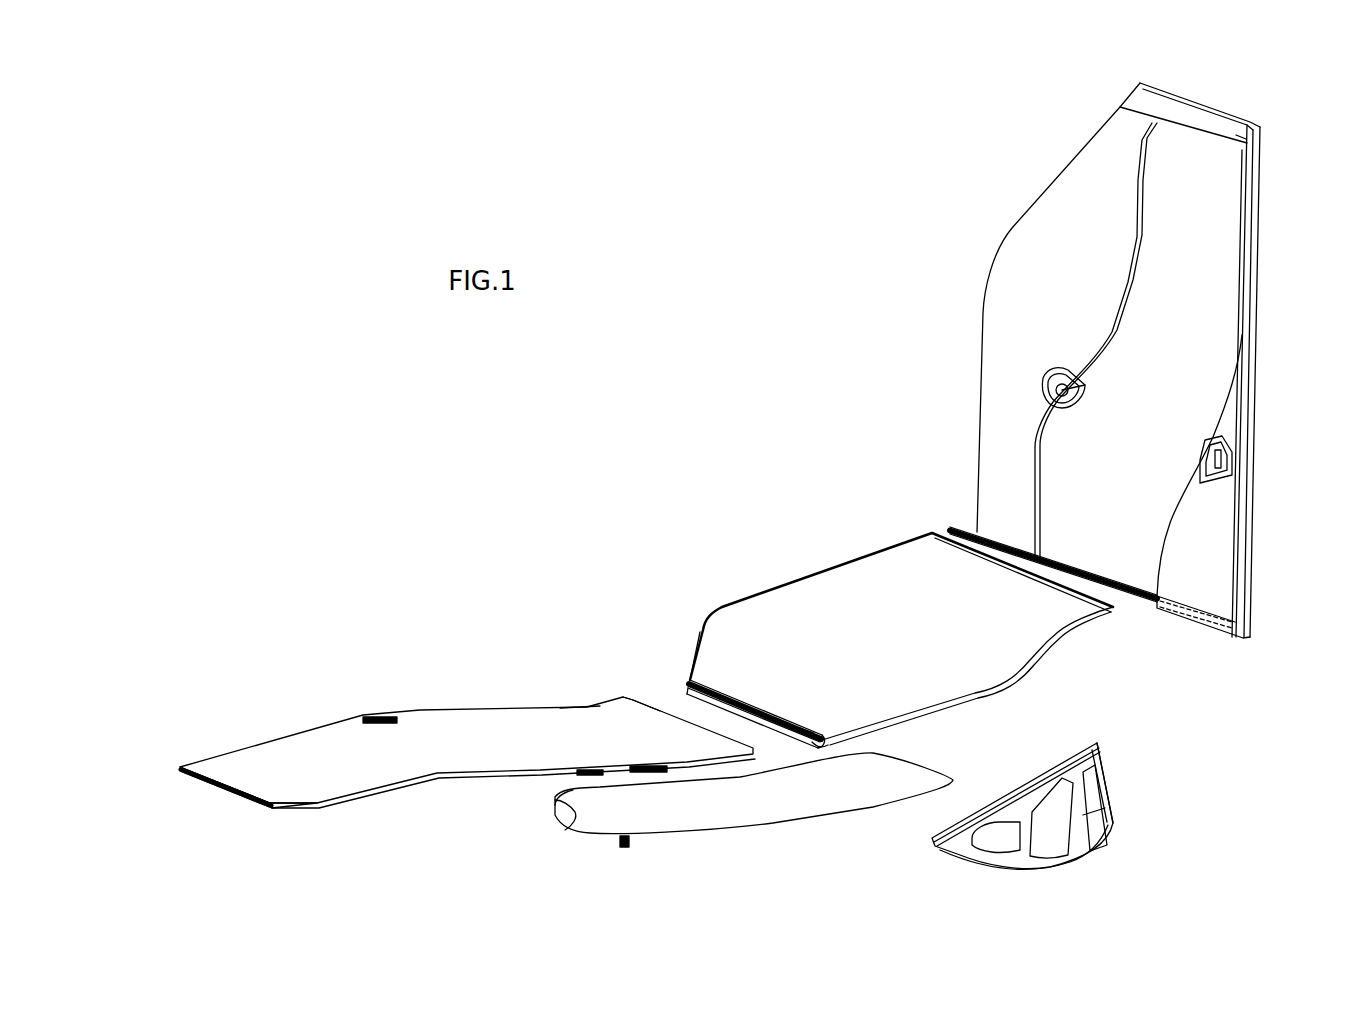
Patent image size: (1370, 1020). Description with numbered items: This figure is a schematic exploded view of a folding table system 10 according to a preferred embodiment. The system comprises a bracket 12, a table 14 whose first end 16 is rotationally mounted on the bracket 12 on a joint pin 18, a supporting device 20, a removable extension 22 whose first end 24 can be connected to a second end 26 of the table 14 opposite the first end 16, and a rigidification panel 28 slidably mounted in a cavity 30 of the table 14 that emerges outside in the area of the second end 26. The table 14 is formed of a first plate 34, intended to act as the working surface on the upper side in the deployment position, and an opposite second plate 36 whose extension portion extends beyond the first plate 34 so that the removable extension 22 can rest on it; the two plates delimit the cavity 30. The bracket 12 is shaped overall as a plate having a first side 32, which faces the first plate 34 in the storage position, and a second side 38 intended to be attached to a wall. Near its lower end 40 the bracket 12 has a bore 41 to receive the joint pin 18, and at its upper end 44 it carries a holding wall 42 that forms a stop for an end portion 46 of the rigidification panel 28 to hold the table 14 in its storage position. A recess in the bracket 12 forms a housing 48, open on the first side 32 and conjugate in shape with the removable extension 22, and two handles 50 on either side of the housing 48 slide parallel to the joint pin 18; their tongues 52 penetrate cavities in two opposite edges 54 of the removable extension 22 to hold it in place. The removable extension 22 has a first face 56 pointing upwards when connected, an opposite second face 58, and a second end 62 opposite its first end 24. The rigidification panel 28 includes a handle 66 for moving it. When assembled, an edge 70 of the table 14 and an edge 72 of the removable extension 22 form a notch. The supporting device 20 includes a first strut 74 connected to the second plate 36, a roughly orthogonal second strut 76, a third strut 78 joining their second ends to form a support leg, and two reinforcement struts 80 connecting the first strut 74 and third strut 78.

The folding table system 10 is at (705, 391).
The bracket 12 is at (1256, 316).
The table 14 is at (808, 563).
The first end 16 is at (1113, 622).
The joint pin 18 is at (1140, 612).
The supporting device 20 is at (1120, 800).
The removable extension 22 is at (500, 708).
The first end 24 is at (647, 700).
The second end 26 is at (690, 697).
The rigidification panel 28 is at (775, 822).
The cavity 30 is at (780, 737).
The first side 32 is at (1010, 244).
The first plate 34 is at (723, 690).
The second plate 36 is at (780, 727).
The second side 38 is at (1256, 528).
The lower end 40 is at (1222, 640).
The bore 41 is at (1220, 614).
The holding wall 42 is at (1262, 144).
The upper end 44 is at (1195, 98).
The end portion 46 is at (572, 815).
The housing 48 is at (1132, 422).
The handles 50 is at (1048, 374).
The tongues 52 is at (1078, 372).
The opposite edges 54 is at (272, 742).
The first face 56 is at (456, 747).
The second face 58 is at (300, 810).
The second end 62 is at (220, 795).
The handle 66 is at (628, 848).
The edge 70 is at (703, 630).
The edge 72 is at (580, 703).
The first strut 74 is at (1040, 785).
The second strut 76 is at (1105, 780).
The third strut 78 is at (1045, 870).
The reinforcement struts 80 is at (1000, 840).